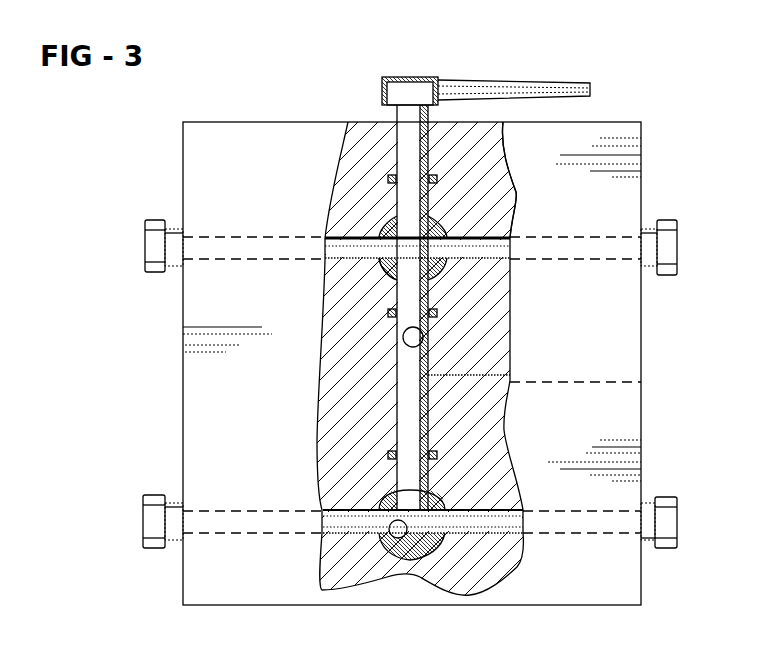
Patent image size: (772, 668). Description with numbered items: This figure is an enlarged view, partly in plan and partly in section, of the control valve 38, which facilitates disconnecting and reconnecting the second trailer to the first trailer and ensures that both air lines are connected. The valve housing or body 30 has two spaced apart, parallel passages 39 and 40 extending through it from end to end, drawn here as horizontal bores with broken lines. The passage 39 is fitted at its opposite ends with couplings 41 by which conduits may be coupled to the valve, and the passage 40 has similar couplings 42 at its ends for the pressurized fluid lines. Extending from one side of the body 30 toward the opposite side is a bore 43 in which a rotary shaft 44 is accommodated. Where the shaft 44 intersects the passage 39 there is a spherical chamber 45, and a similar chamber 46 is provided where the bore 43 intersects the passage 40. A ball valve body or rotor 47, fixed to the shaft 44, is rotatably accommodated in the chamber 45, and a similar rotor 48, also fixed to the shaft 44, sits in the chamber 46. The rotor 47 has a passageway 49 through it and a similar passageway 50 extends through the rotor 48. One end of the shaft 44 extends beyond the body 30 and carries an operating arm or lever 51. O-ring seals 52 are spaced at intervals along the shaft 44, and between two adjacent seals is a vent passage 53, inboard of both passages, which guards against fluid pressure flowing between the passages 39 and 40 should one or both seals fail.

The valve housing 30 is at (272, 143).
The control valve 38 is at (333, 60).
The passage 39 is at (323, 547).
The passage 40 is at (325, 263).
The couplings 41 is at (152, 495).
The couplings 42 is at (155, 220).
The bore 43 is at (424, 340).
The rotary shaft 44 is at (405, 366).
The spherical chamber 45 is at (505, 437).
The spherical chamber 46 is at (516, 197).
The ball valve body or rotor 47 is at (522, 552).
The ball valve body or rotor 48 is at (378, 228).
The passageway 49 is at (408, 560).
The passageway 50 is at (380, 272).
The operating arm or lever 51 is at (461, 82).
The O-ring seals 52 is at (440, 177).
The vent passage 53 is at (590, 382).